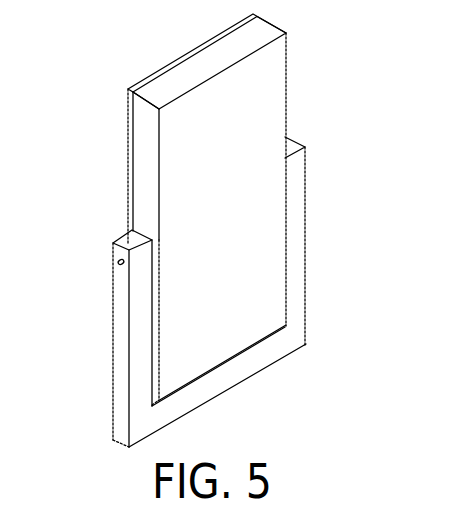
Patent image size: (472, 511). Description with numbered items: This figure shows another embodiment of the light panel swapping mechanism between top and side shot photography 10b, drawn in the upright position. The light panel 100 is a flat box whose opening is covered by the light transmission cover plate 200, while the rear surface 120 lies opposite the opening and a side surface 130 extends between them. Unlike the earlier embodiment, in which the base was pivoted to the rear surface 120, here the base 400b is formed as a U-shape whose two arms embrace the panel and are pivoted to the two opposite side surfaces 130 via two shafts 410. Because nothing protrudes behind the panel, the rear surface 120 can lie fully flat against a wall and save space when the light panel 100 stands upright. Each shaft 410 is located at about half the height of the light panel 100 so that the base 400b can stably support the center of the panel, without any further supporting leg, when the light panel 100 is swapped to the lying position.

The light panel swapping mechanism between top and side shot photography 10b is at (416, 412).
The light panel 100 is at (287, 117).
The rear surface 120 is at (258, 75).
The side surface 130 is at (141, 139).
The light transmission cover plate 200 is at (128, 183).
The base 400b is at (305, 305).
The shaft 410 is at (118, 265).